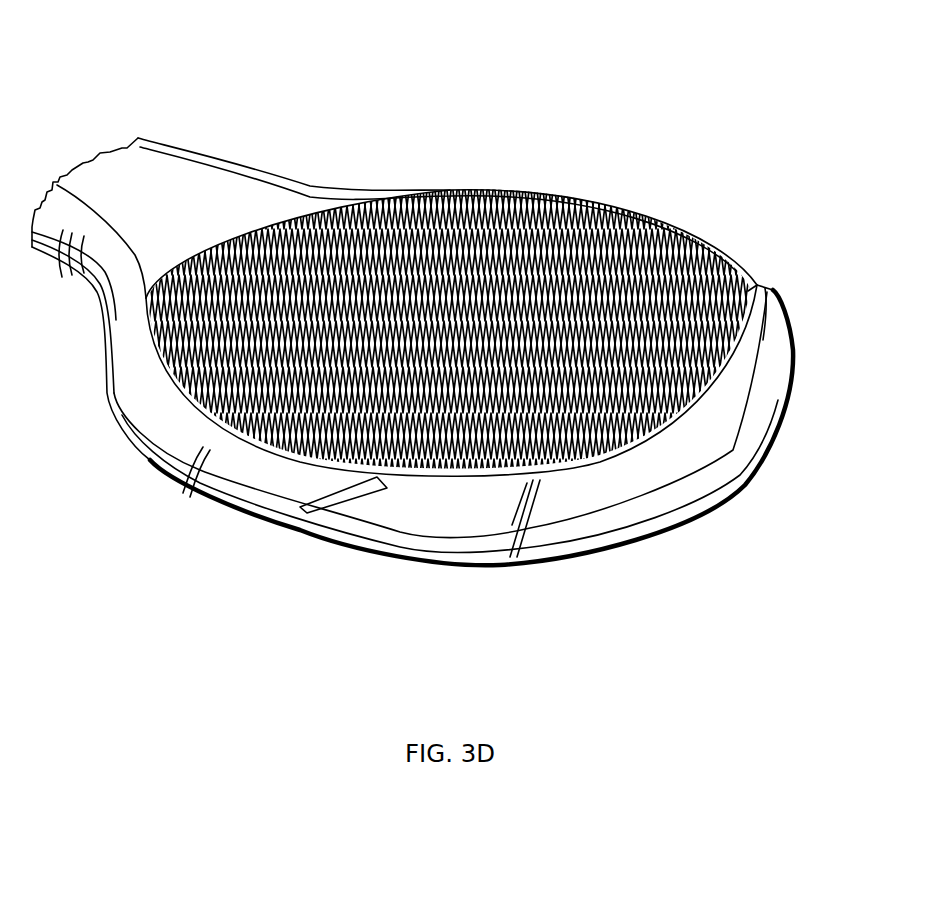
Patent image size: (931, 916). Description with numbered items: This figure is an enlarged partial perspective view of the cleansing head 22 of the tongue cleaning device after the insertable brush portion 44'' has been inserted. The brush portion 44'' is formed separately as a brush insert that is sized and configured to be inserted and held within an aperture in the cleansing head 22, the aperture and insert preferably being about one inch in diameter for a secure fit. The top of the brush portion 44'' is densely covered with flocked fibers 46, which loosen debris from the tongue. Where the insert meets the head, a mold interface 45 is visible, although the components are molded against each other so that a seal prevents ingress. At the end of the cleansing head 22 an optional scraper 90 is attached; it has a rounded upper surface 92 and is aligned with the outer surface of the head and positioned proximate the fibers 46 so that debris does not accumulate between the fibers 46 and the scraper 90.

The brush portion 44'' is at (394, 199).
The flocked fibers 46 is at (413, 183).
The rounded upper surface 92 is at (753, 285).
The mold interface 45 is at (170, 390).
The head 22 is at (165, 472).
The scraper 90 is at (627, 478).